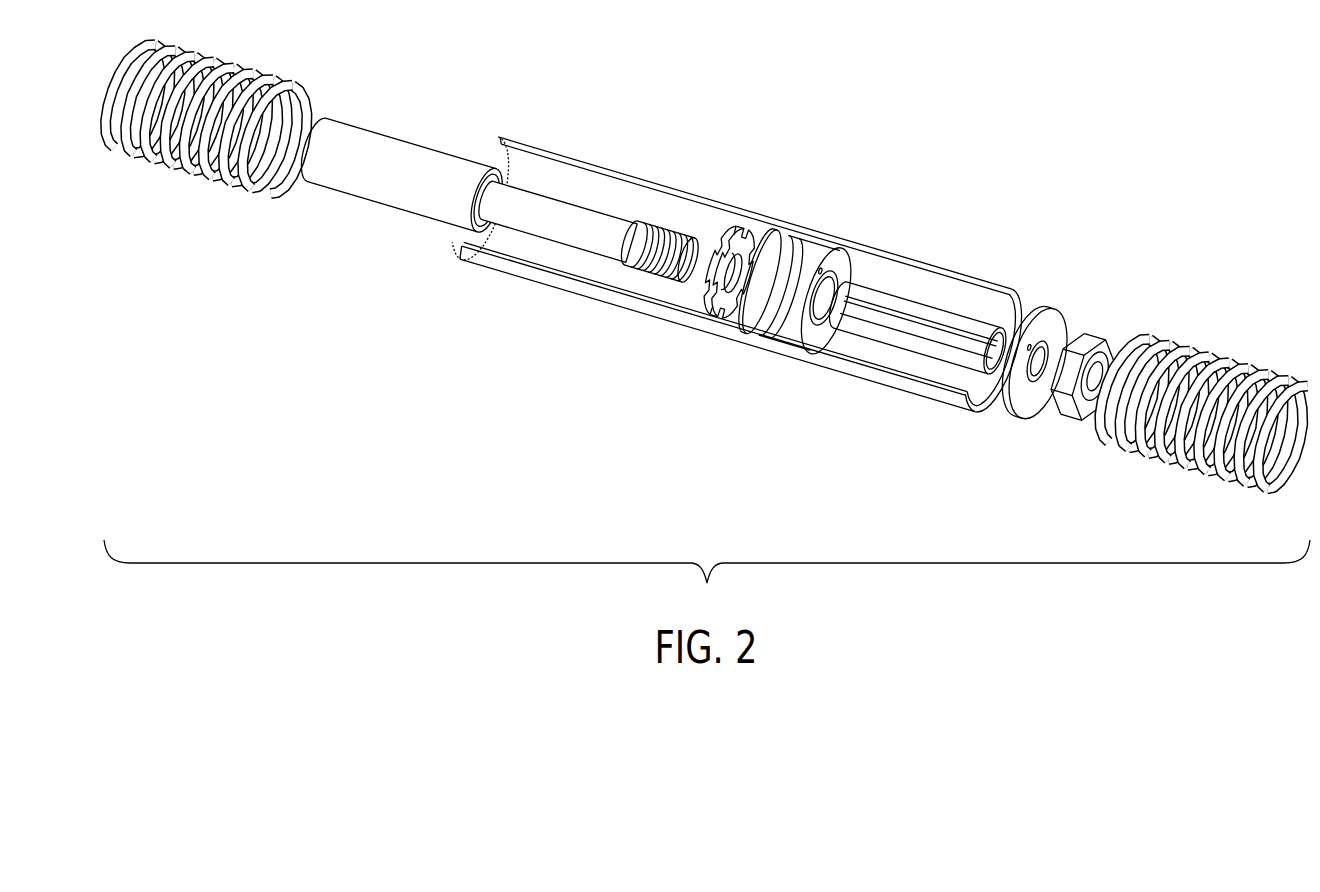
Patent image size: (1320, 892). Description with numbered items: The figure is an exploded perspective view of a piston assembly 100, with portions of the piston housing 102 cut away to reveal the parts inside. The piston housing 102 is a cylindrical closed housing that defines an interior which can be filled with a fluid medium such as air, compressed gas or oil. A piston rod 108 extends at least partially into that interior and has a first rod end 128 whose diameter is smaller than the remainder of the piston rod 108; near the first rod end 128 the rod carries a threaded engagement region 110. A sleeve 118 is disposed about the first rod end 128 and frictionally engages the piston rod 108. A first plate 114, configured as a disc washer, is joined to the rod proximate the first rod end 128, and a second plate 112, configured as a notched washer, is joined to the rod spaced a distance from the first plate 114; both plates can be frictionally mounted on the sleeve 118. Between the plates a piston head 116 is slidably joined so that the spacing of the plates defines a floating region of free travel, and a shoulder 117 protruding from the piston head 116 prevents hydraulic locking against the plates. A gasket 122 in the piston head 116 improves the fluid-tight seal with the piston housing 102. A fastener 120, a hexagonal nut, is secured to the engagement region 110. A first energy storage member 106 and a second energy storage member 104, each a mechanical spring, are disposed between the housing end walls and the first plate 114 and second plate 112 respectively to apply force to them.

The piston assembly 100 is at (707, 578).
The piston housing 102 is at (970, 268).
The second energy storage member 104 is at (297, 84).
The first energy storage member 106 is at (1290, 377).
The piston rod 108 is at (452, 153).
The engagement region 110 is at (660, 243).
The second plate 112 is at (747, 243).
The first plate 114 is at (1057, 317).
The piston head 116 is at (813, 253).
The shoulder 117 is at (820, 347).
The sleeve 118 is at (903, 303).
The fastener 120 is at (1070, 418).
The gasket 122 is at (778, 333).
The first rod end 128 is at (583, 230).